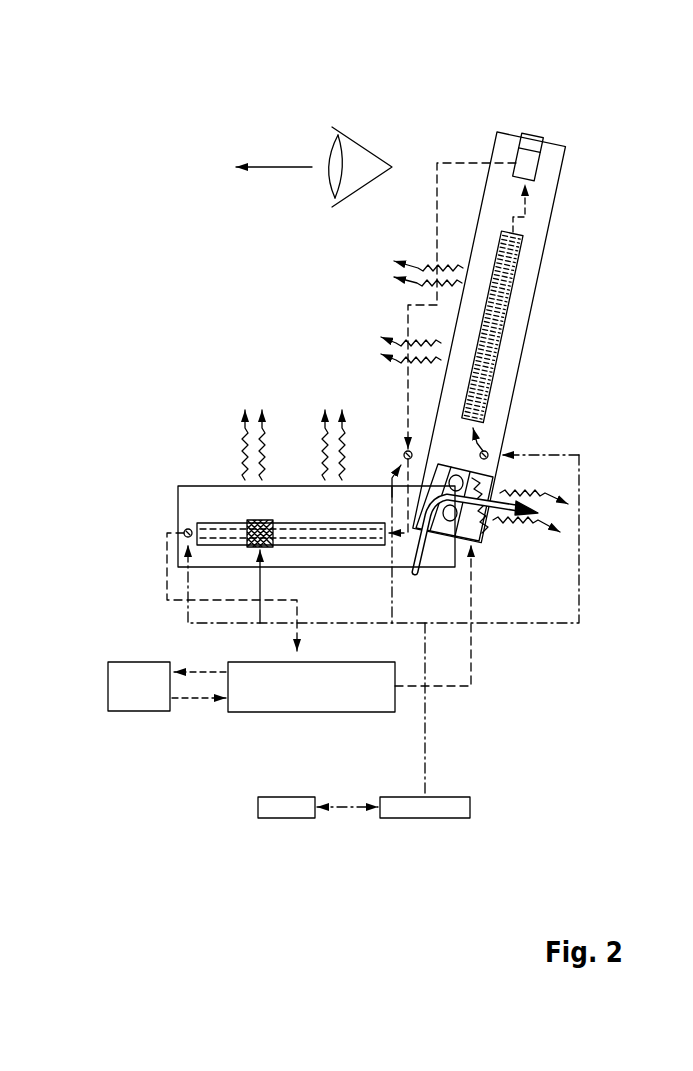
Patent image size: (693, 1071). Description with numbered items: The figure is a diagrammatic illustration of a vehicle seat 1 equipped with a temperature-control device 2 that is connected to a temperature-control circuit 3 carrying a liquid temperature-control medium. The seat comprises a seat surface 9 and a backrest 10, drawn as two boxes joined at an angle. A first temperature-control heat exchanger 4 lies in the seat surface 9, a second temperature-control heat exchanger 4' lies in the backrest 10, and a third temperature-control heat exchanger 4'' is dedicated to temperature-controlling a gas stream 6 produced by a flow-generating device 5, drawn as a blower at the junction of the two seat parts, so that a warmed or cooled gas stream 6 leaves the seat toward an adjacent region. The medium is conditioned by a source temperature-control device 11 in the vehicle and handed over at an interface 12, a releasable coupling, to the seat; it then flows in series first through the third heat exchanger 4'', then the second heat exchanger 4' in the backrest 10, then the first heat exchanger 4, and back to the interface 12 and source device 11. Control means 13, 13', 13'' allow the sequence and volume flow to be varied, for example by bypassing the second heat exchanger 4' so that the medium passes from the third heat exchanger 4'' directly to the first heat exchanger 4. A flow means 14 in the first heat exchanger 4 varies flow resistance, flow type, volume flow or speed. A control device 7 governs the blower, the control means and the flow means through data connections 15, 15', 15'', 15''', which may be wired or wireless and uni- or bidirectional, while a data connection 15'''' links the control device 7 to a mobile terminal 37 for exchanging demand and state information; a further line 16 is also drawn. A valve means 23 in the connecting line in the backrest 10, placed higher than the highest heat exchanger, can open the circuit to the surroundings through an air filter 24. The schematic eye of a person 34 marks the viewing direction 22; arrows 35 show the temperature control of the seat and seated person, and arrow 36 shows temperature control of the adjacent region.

The vehicle seat 1 is at (92, 216).
The temperature-control device 2 is at (120, 354).
The temperature-control circuit 3 is at (119, 431).
The first temperature-control heat exchanger 4 is at (279, 479).
The second temperature-control heat exchanger 4' is at (521, 303).
The third temperature-control heat exchanger 4'' is at (566, 493).
The flow-generating device 5 is at (488, 472).
The gas stream 6 is at (425, 550).
The control device 7 is at (433, 808).
The seat surface 9 is at (197, 497).
The backrest 10 is at (538, 215).
The source temperature-control device 11 is at (138, 698).
The interface 12 is at (312, 698).
The control means 13 is at (527, 430).
The control means 13' is at (383, 439).
The control means 13'' is at (139, 530).
The flow means 14 is at (250, 522).
The data connection 15 is at (430, 539).
The data connection 15' is at (355, 543).
The data connection 15'' is at (198, 592).
The data connection 15''' is at (311, 586).
The data connection 15'''' is at (347, 855).
The data connection 16 is at (471, 668).
The viewing direction 22 is at (282, 165).
The valve means 23 is at (537, 163).
The air filter 24 is at (533, 140).
The person 34 is at (371, 148).
The arrows 35 is at (325, 460).
The arrow 36 is at (529, 535).
The mobile terminal 37 is at (290, 808).